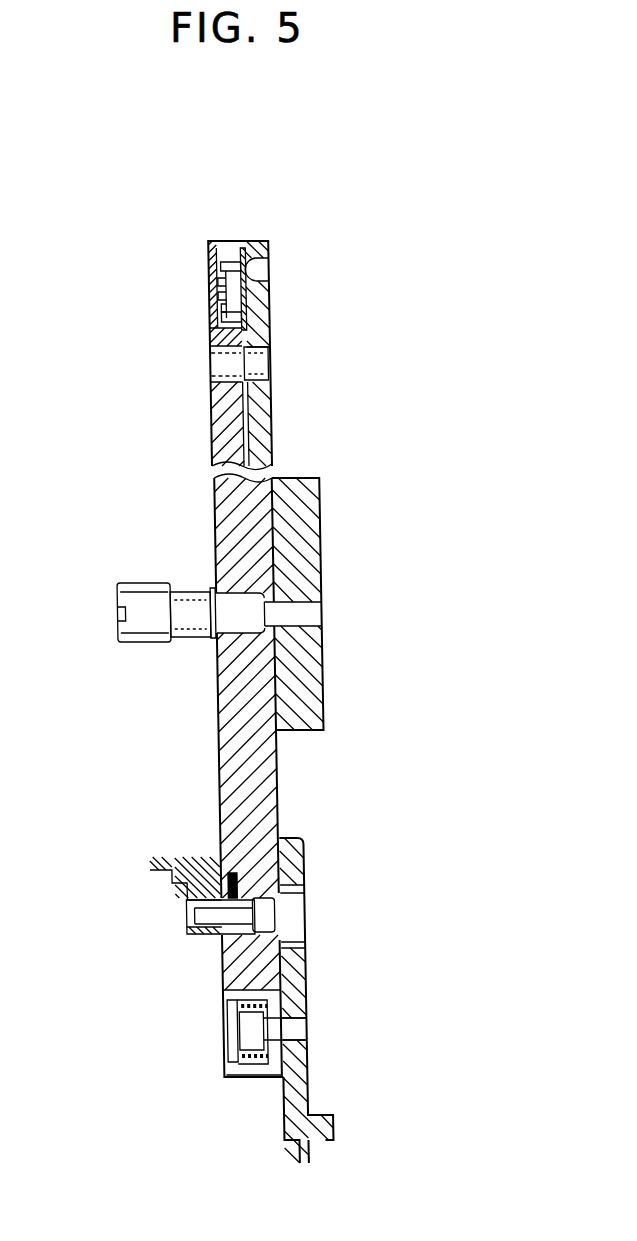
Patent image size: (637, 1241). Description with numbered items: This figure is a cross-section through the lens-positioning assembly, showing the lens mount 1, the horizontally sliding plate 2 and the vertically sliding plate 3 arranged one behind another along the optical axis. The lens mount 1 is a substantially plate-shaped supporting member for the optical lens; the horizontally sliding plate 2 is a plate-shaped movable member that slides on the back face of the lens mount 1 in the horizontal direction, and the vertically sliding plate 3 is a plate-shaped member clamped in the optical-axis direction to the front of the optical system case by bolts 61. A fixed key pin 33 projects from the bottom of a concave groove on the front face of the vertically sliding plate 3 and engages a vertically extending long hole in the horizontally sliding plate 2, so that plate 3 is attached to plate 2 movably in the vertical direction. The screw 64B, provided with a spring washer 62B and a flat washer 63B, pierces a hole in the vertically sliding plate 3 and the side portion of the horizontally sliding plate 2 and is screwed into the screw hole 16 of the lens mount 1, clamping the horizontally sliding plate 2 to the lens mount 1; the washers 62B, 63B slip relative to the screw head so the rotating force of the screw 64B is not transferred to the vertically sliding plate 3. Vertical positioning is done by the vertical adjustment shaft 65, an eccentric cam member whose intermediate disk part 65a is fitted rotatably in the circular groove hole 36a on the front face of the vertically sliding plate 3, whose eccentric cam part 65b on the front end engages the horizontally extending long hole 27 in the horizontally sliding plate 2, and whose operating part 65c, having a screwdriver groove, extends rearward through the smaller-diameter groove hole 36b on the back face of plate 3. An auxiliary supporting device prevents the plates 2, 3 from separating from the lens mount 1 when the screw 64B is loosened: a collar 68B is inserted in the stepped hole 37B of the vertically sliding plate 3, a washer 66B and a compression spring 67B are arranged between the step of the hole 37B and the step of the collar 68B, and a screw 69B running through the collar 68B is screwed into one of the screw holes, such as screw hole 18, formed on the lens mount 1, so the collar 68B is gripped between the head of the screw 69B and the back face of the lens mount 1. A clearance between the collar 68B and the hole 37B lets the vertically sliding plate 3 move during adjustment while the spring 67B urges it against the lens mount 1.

The lens mount 1 is at (314, 688).
The horizontally sliding plate 2 is at (270, 430).
The vertically sliding plate 3 is at (218, 752).
The screw hole 16 is at (310, 627).
The screw hole 18 is at (305, 1030).
The long hole 27 is at (268, 277).
The key pin 33 is at (257, 363).
The circular groove hole 36a is at (243, 262).
The groove hole 36b is at (210, 274).
The stepped hole 37B is at (222, 992).
The bolt 61 is at (275, 915).
The spring washer 62B is at (207, 594).
The flat washer 63B is at (212, 643).
The screw 64B is at (137, 600).
The vertical adjustment shaft 65 is at (140, 299).
The disk part 65a is at (212, 318).
The eccentric cam part 65b is at (212, 338).
The operating part 65c is at (212, 300).
The washer 66B is at (262, 1079).
The compression spring 67B is at (223, 1066).
The collar 68B is at (220, 1060).
The screw 69B is at (223, 1032).